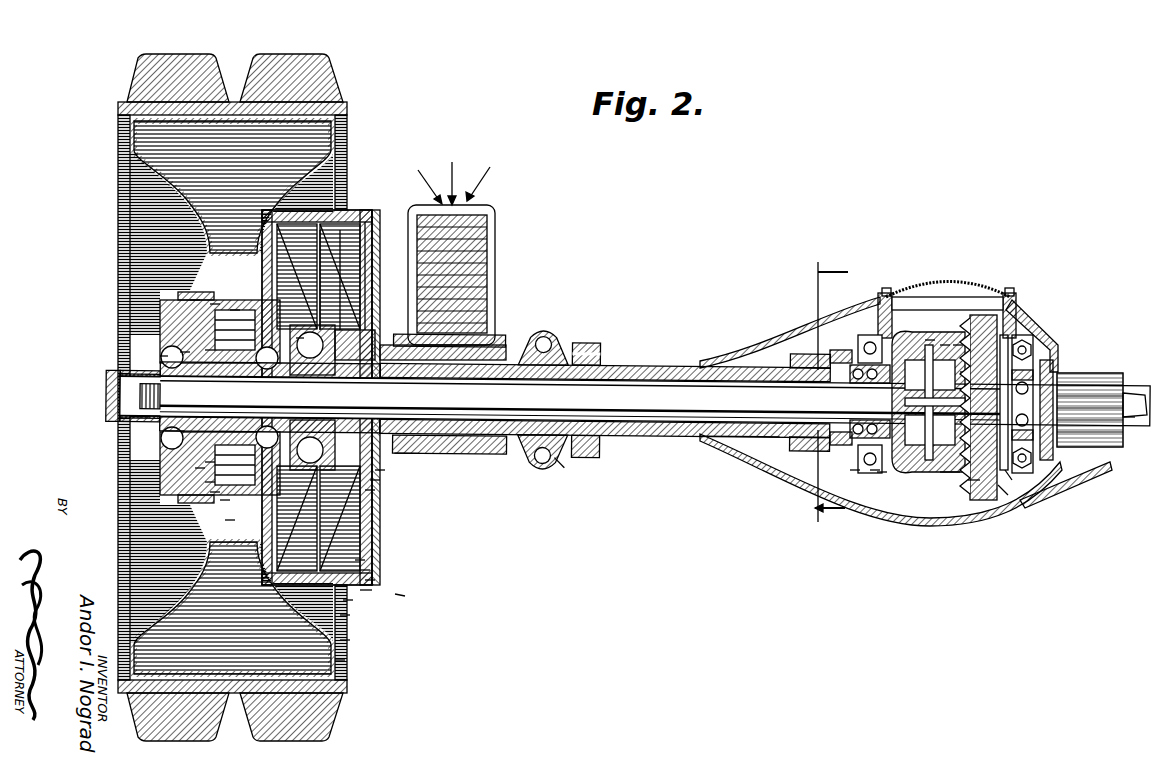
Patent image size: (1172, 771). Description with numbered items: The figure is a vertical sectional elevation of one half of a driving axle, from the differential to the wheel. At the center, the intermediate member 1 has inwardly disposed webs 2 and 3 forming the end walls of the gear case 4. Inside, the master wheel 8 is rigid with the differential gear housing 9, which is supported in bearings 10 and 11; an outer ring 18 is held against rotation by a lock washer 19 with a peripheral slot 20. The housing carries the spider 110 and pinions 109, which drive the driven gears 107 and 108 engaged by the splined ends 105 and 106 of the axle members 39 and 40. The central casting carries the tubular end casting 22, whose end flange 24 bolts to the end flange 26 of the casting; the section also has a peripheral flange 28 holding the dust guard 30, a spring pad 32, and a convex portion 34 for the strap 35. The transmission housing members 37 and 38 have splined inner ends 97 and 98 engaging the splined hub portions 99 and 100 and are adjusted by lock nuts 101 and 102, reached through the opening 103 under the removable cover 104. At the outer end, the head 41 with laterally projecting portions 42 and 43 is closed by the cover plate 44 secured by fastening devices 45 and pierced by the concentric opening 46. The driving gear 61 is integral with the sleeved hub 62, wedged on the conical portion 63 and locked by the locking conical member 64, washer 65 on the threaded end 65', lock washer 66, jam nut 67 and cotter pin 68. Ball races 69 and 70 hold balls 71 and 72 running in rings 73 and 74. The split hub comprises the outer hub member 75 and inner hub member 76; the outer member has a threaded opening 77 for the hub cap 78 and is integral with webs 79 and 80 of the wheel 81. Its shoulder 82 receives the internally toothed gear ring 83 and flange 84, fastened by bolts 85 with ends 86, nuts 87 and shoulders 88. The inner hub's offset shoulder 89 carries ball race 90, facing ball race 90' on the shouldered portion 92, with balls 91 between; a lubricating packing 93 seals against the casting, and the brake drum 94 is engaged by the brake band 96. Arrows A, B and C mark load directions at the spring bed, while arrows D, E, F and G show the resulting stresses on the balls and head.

The intermediate member 1 is at (995, 470).
The web 2 is at (815, 447).
The web 3 is at (1035, 472).
The gear case 4 is at (975, 482).
The master wheel 8 is at (1005, 492).
The differential gear housing 9 is at (855, 612).
The bearing 10 is at (860, 360).
The bearing 11 is at (1030, 482).
The outer ring 18 is at (855, 472).
The lock washer 19 is at (875, 474).
The peripheral slot 20 is at (882, 474).
The tubular end casting 22 is at (513, 352).
The end flange 24 is at (583, 340).
The end flange 26 is at (598, 345).
The peripheral flange 28 is at (388, 453).
The dust guard 30 is at (366, 590).
The spring pad 32 is at (500, 333).
The convex portion 34 is at (560, 458).
The strap 35 is at (548, 468).
The transmission housing member 37 is at (730, 362).
The transmission housing member 38 is at (1128, 395).
The axle member 39 is at (740, 433).
The axle member 40 is at (1130, 420).
The head 41 is at (340, 210).
The laterally projecting portion 42 is at (180, 292).
The laterally projecting portion 43 is at (210, 482).
The cover plate 44 is at (200, 468).
The fastening device 45 is at (195, 300).
The concentric opening 46 is at (235, 310).
The driving gear 61 is at (295, 330).
The sleeved hub 62 is at (300, 340).
The conical portion 63 is at (370, 490).
The locking conical member 64 is at (150, 428).
The washer 65 is at (105, 422).
The threaded end 65' is at (110, 395).
The lock washer 66 is at (164, 356).
The jam nut 67 is at (130, 380).
The cotter pin 68 is at (130, 406).
The ball race 69 is at (185, 352).
The ball race 70 is at (352, 332).
The balls 71 is at (210, 350).
The balls 72 is at (330, 278).
The ball race ring 73 is at (230, 446).
The ball race ring 74 is at (342, 252).
The outer hub member 75 is at (215, 304).
The inner hub member 76 is at (366, 236).
The threaded opening 77 is at (175, 440).
The hub cap 78 is at (106, 362).
The web 79 is at (132, 172).
The web 80 is at (345, 162).
The wheel 81 is at (347, 133).
The shoulder 82 is at (340, 660).
The internally toothed gear ring 83 is at (345, 640).
The flange 84 is at (345, 615).
The bolt 85 is at (225, 500).
The bolt end 86 is at (348, 600).
The nut 87 is at (215, 492).
The shoulder 88 is at (230, 520).
The offset shoulder 89 is at (370, 580).
The ball race 90 is at (383, 559).
The ball race 90' is at (399, 500).
The balls 91 is at (362, 558).
The shouldered portion 92 is at (380, 470).
The lubricating packing 93 is at (398, 345).
The brake drum 94 is at (377, 212).
The brake band 96 is at (358, 216).
The splined inner end 97 is at (800, 350).
The splined inner end 98 is at (1100, 378).
The splined hub portion 99 is at (835, 352).
The splined hub portion 100 is at (1085, 383).
The lock nut 101 is at (825, 452).
The lock nut 102 is at (1028, 358).
The opening 103 is at (905, 300).
The removable cover 104 is at (920, 278).
The splined end 105 is at (930, 476).
The splined end 106 is at (950, 474).
The driven gear 107 is at (930, 345).
The driven gear 108 is at (965, 370).
The pinion 109 is at (945, 350).
The spider 110 is at (958, 348).
The arrow A is at (450, 174).
The arrow B is at (481, 175).
The arrow C is at (425, 178).
The arrow D is at (412, 453).
The arrow E is at (210, 462).
The arrow F is at (400, 595).
The arrow G is at (482, 290).